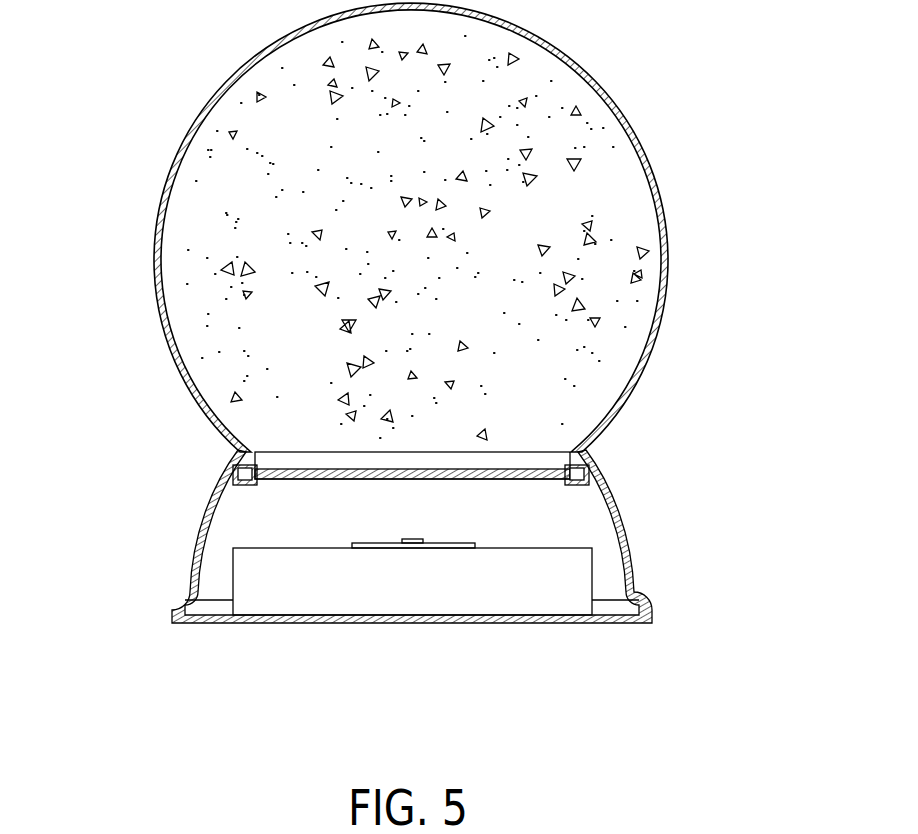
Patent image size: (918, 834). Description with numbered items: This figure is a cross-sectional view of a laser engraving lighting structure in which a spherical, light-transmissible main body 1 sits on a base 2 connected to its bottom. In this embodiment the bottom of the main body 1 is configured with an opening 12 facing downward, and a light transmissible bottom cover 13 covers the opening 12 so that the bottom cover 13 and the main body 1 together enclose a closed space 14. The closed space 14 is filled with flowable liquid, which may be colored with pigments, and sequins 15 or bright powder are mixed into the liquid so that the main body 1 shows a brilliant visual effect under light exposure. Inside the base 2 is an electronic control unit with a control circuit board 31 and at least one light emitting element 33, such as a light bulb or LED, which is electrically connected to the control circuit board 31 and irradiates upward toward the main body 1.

The main body 1 is at (642, 142).
The base 2 is at (190, 567).
The opening 12 is at (508, 467).
The light transmissible bottom cover 13 is at (293, 478).
The closed space 14 is at (224, 245).
The sequins 15 is at (222, 132).
The control circuit board 31 is at (372, 548).
The light emitting element 33 is at (425, 540).